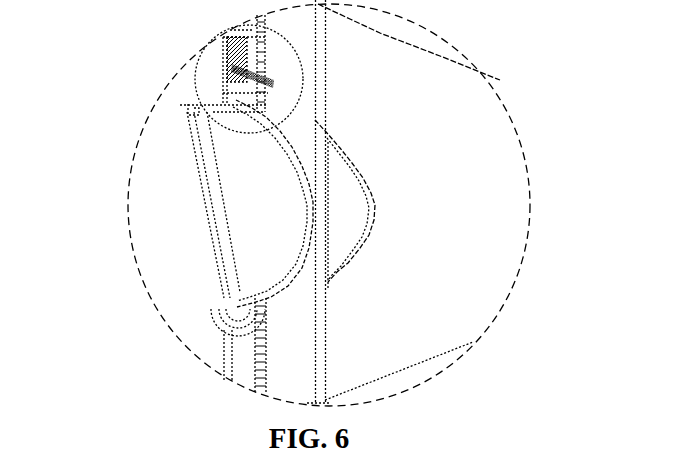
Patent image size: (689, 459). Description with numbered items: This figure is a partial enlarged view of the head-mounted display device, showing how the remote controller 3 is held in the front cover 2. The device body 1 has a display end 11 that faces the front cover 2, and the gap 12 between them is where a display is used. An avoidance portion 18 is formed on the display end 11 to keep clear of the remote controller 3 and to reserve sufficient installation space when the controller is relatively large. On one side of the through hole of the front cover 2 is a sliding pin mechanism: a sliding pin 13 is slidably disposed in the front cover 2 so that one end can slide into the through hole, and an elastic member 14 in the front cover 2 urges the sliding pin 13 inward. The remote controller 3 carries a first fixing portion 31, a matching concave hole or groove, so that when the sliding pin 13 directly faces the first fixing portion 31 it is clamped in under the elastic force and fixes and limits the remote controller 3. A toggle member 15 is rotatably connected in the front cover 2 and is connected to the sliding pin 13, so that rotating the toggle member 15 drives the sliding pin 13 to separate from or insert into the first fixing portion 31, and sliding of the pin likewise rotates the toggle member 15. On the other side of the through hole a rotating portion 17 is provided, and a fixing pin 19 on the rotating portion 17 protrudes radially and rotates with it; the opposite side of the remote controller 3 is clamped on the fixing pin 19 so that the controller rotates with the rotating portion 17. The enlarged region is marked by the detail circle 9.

The device body 1 is at (430, 132).
The front cover 2 is at (243, 354).
The remote controller 3 is at (227, 152).
The detail region 9 is at (218, 45).
The display end 11 is at (325, 173).
The gap 12 is at (295, 62).
The sliding pin 13 is at (223, 93).
The elastic member 14 is at (232, 53).
The toggle member 15 is at (228, 72).
The rotating portion 17 is at (231, 316).
The avoidance portion 18 is at (370, 204).
The fixing pin 19 is at (221, 294).
The first fixing portion 31 is at (190, 109).